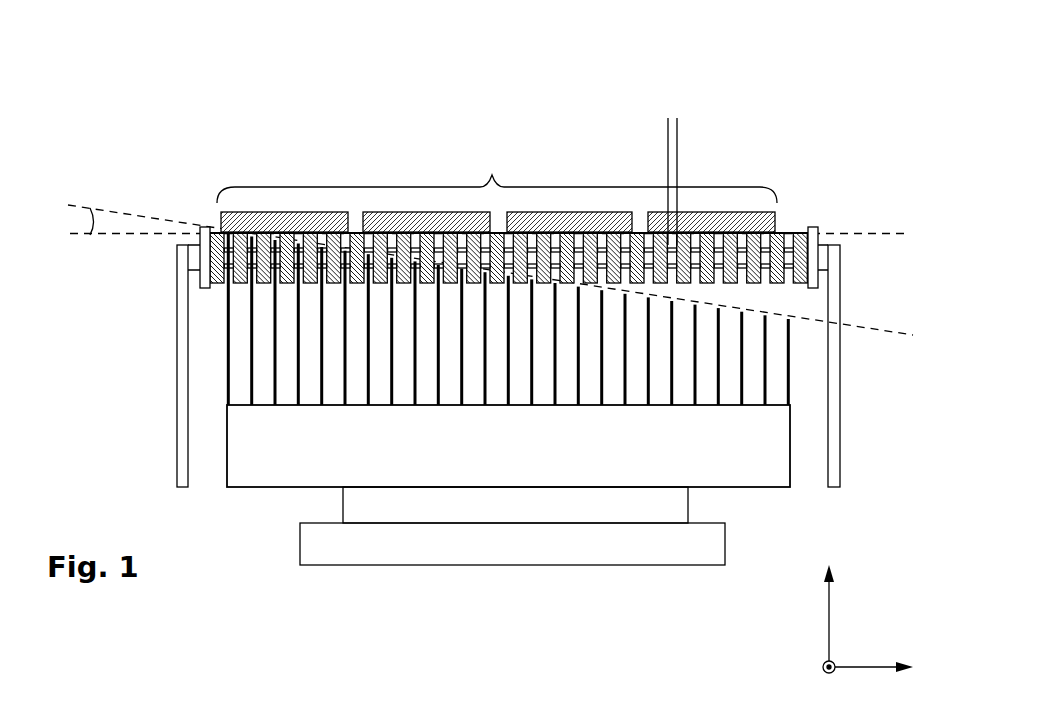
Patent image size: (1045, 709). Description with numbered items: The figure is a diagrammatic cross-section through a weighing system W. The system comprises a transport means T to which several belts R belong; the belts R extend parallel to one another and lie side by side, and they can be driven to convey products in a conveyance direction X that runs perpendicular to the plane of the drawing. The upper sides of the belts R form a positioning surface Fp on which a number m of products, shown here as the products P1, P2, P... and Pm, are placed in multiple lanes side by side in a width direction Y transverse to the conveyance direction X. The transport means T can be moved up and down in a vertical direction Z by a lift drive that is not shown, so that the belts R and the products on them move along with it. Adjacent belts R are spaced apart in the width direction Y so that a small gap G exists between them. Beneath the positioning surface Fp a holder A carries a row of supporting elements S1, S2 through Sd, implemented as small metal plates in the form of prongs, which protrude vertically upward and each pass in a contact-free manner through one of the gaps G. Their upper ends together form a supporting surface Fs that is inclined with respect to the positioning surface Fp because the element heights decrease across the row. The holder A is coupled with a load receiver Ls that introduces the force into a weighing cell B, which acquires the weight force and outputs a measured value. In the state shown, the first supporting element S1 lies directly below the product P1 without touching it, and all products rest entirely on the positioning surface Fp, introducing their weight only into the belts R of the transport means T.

The weighing system W is at (205, 155).
The transport means T is at (160, 259).
The belts R is at (230, 285).
The first supporting element S1 is at (228, 377).
The second supporting element S2 is at (250, 387).
The last supporting element Sd is at (790, 377).
The holder A is at (576, 464).
The load receiver Ls is at (457, 513).
The weighing cell B is at (571, 540).
The first product P1 is at (322, 217).
The second product P2 is at (438, 217).
The further products P... is at (578, 213).
The m-th product Pm is at (710, 220).
The number of products m is at (497, 170).
The gap G is at (650, 139).
The positioning surface Fp is at (883, 233).
The supporting surface Fs is at (883, 327).
The conveyance direction X is at (811, 679).
The width direction Y is at (875, 647).
The vertical direction Z is at (840, 599).